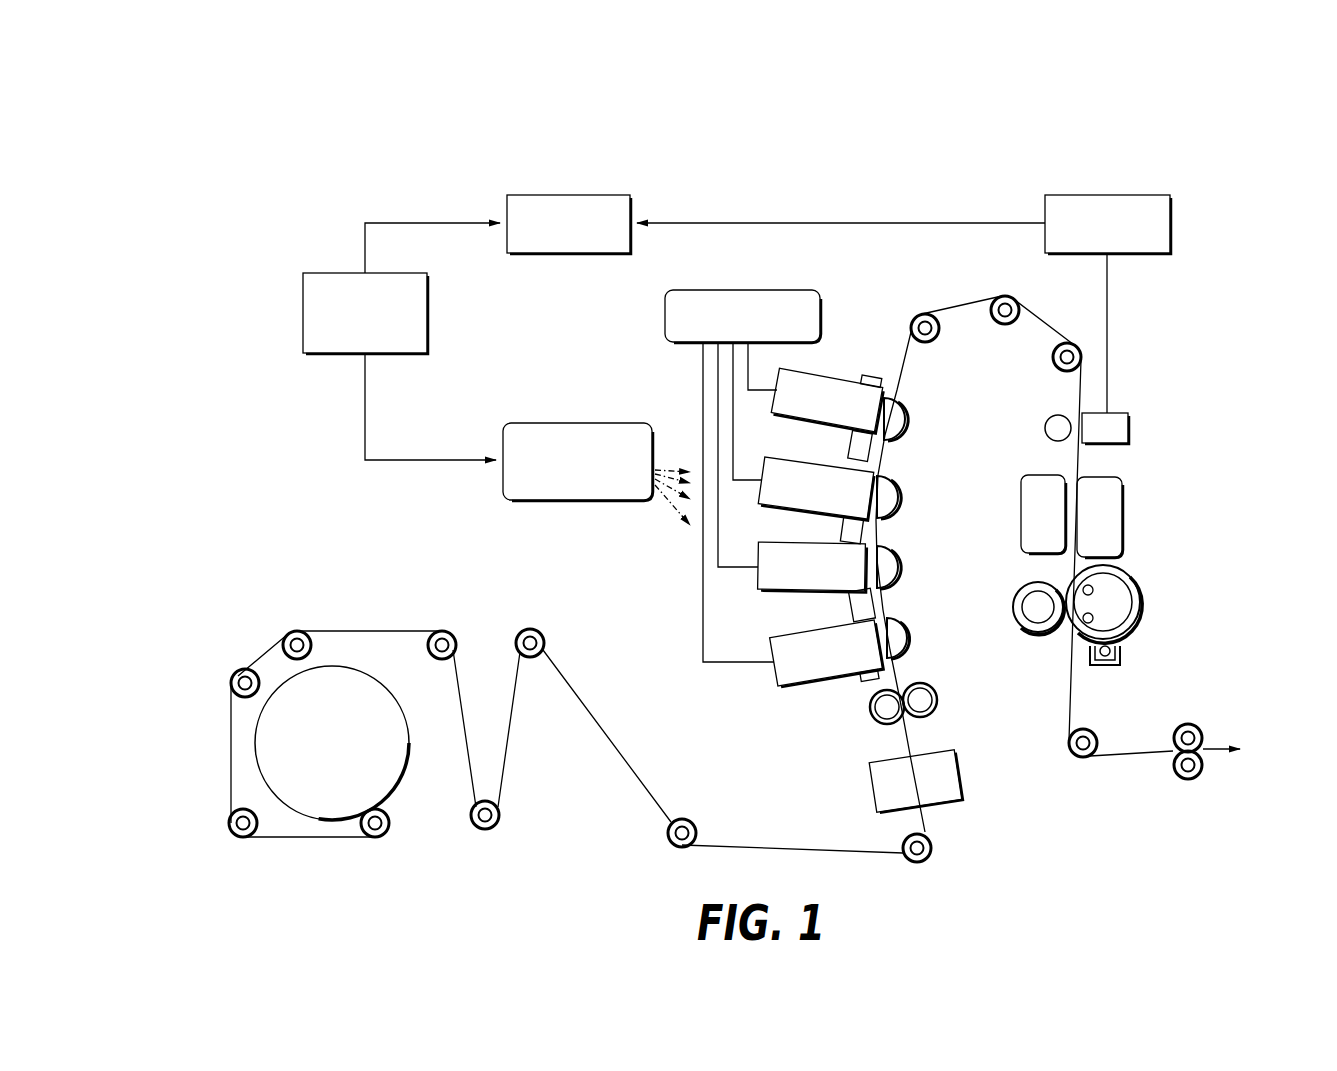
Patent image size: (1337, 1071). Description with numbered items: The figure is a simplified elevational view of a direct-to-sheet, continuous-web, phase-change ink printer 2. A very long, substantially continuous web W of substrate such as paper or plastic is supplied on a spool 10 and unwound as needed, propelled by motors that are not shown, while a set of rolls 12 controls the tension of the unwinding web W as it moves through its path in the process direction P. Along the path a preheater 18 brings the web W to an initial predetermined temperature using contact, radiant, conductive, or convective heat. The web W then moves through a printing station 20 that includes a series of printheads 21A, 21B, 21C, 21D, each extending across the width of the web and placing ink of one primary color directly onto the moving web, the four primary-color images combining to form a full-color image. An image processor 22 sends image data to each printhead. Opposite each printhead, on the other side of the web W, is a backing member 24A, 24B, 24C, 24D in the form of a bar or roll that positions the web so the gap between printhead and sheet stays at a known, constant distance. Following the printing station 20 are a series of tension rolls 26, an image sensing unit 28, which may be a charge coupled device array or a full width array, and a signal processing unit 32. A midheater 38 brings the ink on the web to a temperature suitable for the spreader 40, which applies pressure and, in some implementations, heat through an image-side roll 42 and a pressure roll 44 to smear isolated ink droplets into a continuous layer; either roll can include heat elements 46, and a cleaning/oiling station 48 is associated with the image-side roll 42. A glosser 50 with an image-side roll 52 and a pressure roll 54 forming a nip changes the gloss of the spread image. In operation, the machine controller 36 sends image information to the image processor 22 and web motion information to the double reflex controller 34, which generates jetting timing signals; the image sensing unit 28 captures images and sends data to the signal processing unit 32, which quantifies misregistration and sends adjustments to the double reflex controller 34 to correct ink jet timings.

The direct-to-sheet, continuous-web, phase-change ink printer 2 is at (889, 156).
The spool 10 is at (398, 702).
The rolls 12 is at (533, 660).
The preheater 18 is at (962, 773).
The printing station 20 is at (694, 588).
The printhead 21A is at (827, 658).
The printhead 21B is at (812, 567).
The printhead 21C is at (816, 488).
The printhead 21D is at (828, 396).
The image processor 22 is at (547, 422).
The backing member 24A is at (910, 635).
The backing member 24B is at (900, 495).
The backing member 24C is at (898, 563).
The backing member 24D is at (910, 417).
The tension rolls 26 is at (998, 327).
The image sensing unit 28 is at (1133, 394).
The signal processing unit 32 is at (1128, 195).
The double reflex controller 34 is at (618, 193).
The machine controller 36 is at (428, 317).
The midheater 38 is at (1022, 495).
The spreader 40 is at (1108, 603).
The image-side roll 42 is at (1141, 614).
The pressure roll 44 is at (1033, 617).
The heat elements 46 is at (1093, 588).
The cleaning/oiling station 48 is at (1113, 667).
The glosser 50 is at (1218, 727).
The image-side roll 52 is at (1203, 730).
The pressure roll 54 is at (1203, 772).
The web W is at (340, 630).
The process direction P is at (835, 840).